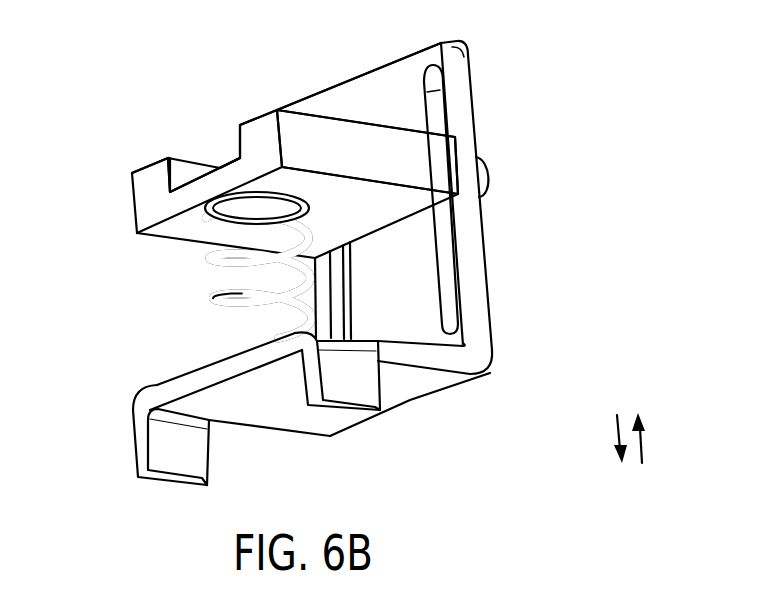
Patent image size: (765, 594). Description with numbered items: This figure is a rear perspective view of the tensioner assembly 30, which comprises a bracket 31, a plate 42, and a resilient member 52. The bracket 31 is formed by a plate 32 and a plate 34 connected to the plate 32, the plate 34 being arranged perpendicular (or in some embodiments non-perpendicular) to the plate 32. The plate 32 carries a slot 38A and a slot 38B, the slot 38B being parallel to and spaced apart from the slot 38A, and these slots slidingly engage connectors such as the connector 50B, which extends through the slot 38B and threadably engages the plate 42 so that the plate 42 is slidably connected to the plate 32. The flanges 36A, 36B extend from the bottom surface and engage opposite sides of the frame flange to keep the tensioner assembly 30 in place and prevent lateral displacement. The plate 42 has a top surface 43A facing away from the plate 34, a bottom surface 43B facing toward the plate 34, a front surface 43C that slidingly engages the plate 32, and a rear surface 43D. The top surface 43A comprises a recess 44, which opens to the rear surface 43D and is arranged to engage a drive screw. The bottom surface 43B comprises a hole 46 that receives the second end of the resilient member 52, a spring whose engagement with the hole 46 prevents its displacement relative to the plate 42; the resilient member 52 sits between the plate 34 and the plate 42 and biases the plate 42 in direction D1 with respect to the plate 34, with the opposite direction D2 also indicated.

The tensioner assembly 30 is at (88, 86).
The bracket 31 is at (482, 302).
The plate 32 is at (483, 334).
The plate 34 is at (253, 402).
The flange 36A is at (180, 458).
The flange 36B is at (363, 378).
The slot 38A is at (308, 308).
The slot 38B is at (471, 272).
The plate 42 is at (147, 218).
The top surface 43A is at (259, 113).
The bottom surface 43B is at (337, 185).
The front surface 43C is at (462, 143).
The rear surface 43D is at (163, 175).
The recess 44 is at (196, 126).
The hole 46 is at (252, 207).
The connector 50B is at (483, 168).
The resilient member 52 is at (210, 313).
The direction D1 is at (643, 452).
The direction D2 is at (615, 428).